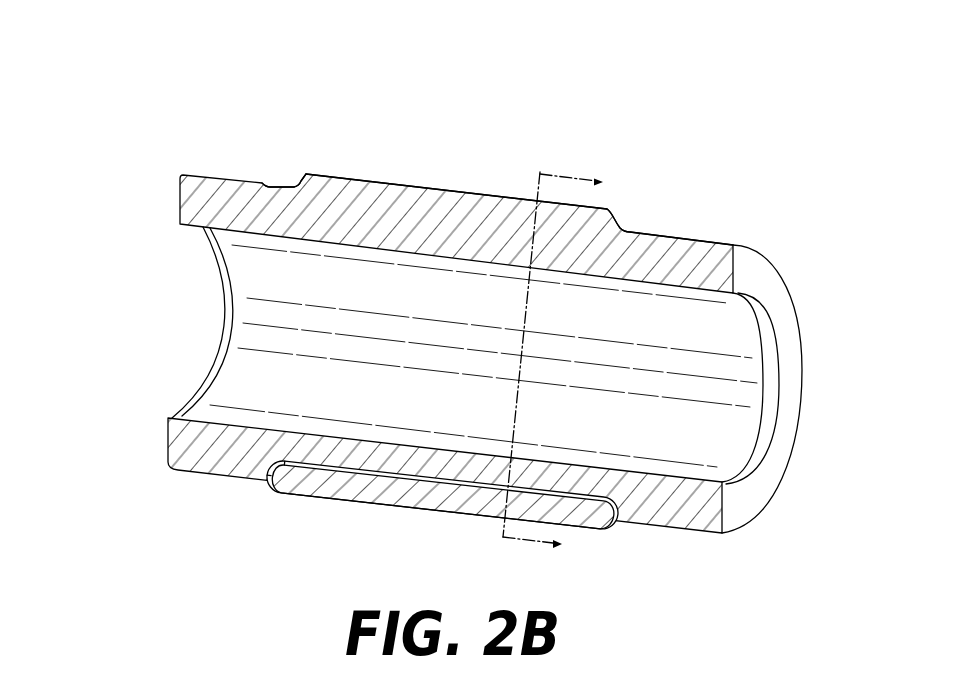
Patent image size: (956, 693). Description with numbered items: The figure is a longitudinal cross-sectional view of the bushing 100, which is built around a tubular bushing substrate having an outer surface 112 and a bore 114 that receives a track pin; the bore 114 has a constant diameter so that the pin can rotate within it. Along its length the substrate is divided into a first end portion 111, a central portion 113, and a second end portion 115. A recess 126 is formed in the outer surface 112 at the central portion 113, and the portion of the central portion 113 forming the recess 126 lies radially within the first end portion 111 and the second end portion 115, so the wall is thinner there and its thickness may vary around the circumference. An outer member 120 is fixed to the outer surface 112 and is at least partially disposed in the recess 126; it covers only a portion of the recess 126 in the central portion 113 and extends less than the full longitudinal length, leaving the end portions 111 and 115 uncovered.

The bushing 100 is at (138, 78).
The first end portion 111 is at (267, 199).
The outer surface 112 is at (337, 177).
The central portion 113 is at (470, 243).
The bore 114 is at (262, 364).
The second end portion 115 is at (681, 250).
The outer member 120 is at (608, 528).
The recess 126 is at (275, 493).